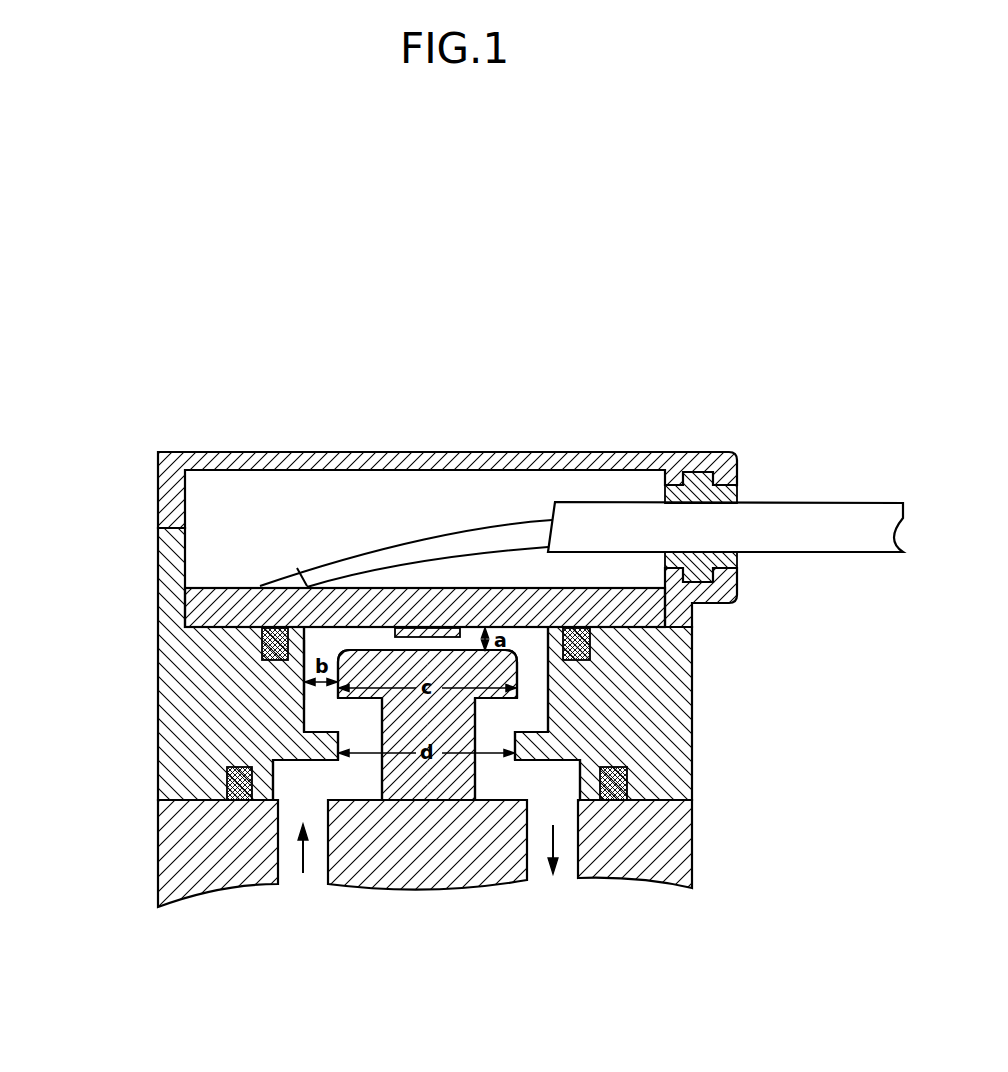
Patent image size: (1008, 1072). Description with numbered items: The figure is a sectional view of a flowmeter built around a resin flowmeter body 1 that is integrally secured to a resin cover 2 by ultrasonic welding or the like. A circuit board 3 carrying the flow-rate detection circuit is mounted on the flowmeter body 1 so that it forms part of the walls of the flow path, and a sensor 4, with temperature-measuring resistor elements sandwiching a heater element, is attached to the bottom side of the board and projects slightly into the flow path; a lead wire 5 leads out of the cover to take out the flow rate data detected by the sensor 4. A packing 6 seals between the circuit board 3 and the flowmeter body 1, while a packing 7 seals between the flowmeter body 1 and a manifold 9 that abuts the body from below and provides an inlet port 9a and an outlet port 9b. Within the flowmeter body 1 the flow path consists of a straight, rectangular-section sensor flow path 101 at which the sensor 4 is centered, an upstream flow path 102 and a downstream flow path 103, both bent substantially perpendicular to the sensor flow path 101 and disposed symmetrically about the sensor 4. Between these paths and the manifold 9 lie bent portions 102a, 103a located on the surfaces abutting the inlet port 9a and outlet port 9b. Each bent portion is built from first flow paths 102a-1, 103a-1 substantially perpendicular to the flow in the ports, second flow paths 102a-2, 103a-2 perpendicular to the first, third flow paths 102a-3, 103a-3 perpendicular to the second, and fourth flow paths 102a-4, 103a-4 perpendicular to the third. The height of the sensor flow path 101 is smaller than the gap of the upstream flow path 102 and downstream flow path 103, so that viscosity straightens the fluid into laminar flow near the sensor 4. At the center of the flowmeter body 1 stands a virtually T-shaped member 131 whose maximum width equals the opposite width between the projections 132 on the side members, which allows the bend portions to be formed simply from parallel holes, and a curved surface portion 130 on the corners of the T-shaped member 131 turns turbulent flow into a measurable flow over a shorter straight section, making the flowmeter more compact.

The flowmeter body 1 is at (693, 784).
The cover 2 is at (546, 452).
The circuit board 3 is at (223, 587).
The sensor 4 is at (428, 628).
The lead wire 5 is at (622, 502).
The packing 6 is at (265, 626).
The packing 7 is at (177, 790).
The manifold 9 is at (693, 836).
The inlet port 9a is at (317, 855).
The outlet port 9b is at (537, 850).
The sensor flow path 101 is at (323, 642).
The upstream flow path 102 is at (318, 668).
The bent portion 102a is at (370, 733).
The first flow path 102a-1 is at (287, 780).
The second flow path 102a-2 is at (352, 740).
The third flow path 102a-3 is at (357, 715).
The fourth flow path 102a-4 is at (320, 697).
The downstream flow path 103 is at (533, 668).
The bent portion 103a is at (487, 733).
The first flow path 103a-1 is at (568, 780).
The second flow path 103a-2 is at (502, 740).
The third flow path 103a-3 is at (495, 715).
The fourth flow path 103a-4 is at (533, 697).
The curved surface portion 130 is at (521, 655).
The T-shaped member 131 is at (458, 662).
The projections 132 is at (567, 782).